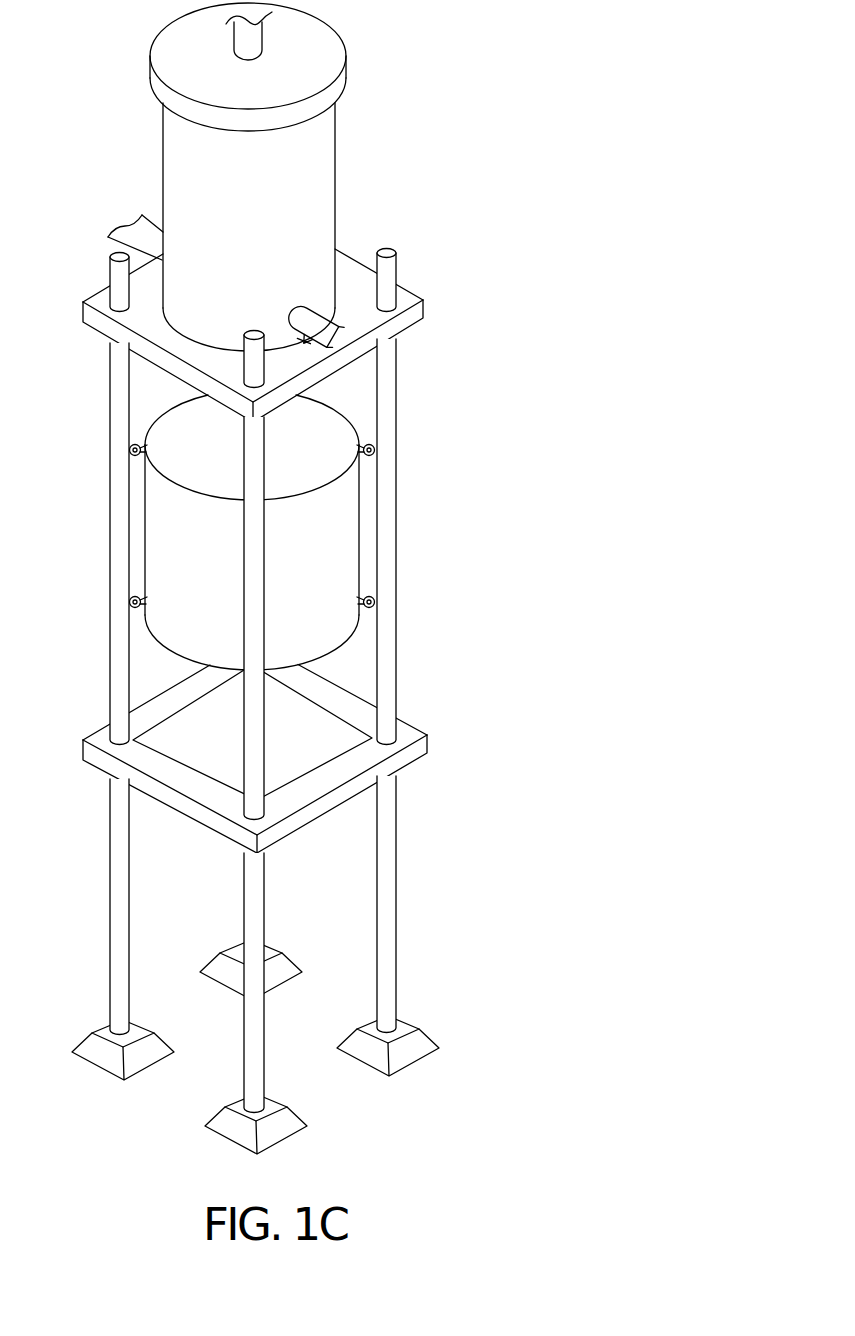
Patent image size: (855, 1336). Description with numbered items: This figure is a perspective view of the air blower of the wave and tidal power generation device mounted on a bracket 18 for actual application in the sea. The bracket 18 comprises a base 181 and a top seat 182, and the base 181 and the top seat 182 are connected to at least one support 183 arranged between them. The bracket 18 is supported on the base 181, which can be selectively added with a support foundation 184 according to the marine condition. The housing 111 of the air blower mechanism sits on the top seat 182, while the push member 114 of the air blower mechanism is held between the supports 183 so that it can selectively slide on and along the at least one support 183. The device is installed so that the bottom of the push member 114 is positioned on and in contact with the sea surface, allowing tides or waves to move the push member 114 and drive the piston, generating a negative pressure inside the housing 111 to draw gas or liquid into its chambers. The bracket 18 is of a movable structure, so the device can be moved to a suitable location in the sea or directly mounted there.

The housing 111 is at (300, 188).
The push member 114 is at (340, 541).
The bracket 18 is at (294, 702).
The base 181 is at (425, 748).
The top seat 182 is at (402, 324).
The support 183 is at (387, 663).
The support foundation 184 is at (428, 1043).